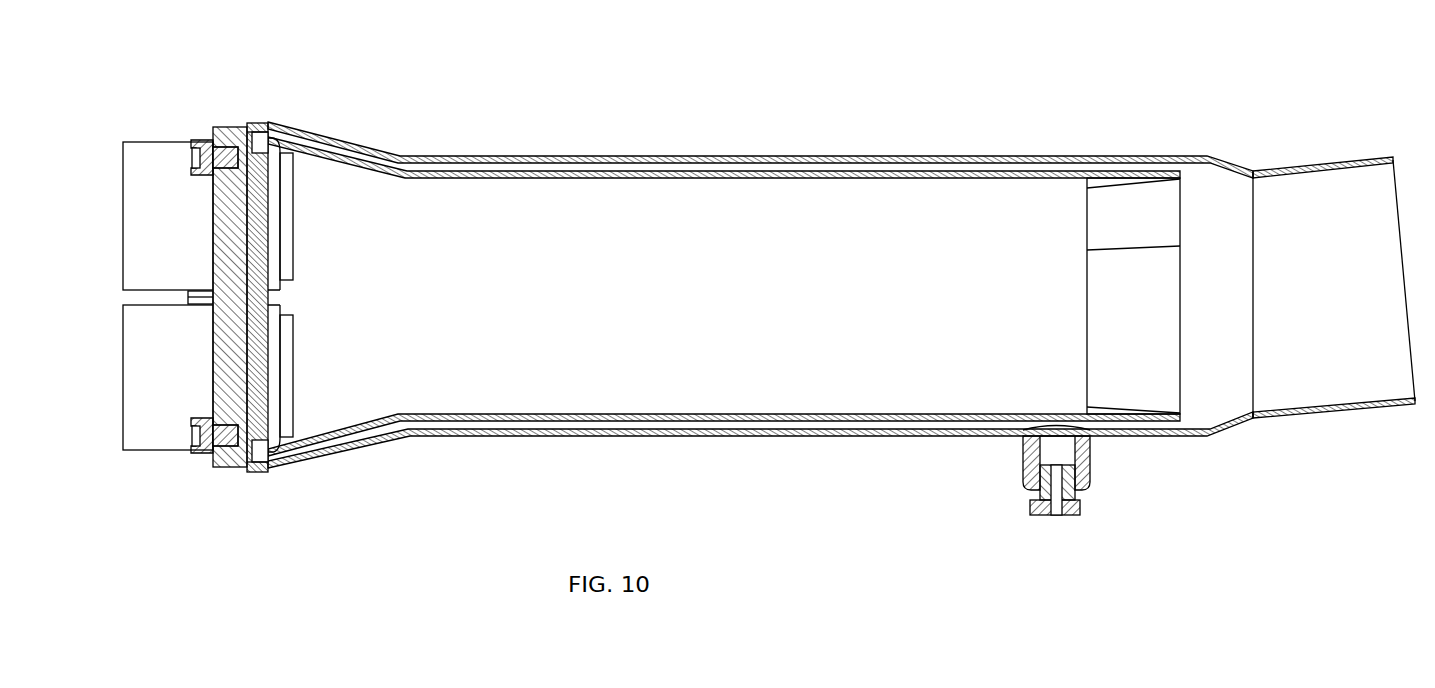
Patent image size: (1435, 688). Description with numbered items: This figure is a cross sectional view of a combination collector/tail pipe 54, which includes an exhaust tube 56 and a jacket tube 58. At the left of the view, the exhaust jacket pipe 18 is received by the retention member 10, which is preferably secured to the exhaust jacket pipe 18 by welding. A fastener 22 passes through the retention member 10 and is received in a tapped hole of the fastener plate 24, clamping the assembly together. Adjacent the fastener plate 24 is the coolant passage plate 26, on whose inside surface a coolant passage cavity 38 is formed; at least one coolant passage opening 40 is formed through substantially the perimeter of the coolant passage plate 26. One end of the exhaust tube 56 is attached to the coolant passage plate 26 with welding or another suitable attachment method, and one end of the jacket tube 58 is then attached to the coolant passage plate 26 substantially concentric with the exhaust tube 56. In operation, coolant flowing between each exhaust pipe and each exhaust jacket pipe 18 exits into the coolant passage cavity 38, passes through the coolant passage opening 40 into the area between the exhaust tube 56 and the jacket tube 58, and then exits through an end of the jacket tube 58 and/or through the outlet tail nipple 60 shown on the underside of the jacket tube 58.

The retention member 10 is at (269, 284).
The exhaust jacket pipe 18 is at (148, 172).
The fastener 22 is at (205, 455).
The fastener plate 24 is at (232, 128).
The coolant passage plate 26 is at (257, 472).
The coolant passage cavity 38 is at (250, 378).
The coolant passage opening 40 is at (268, 140).
The combination collector/tail pipe 54 is at (541, 108).
The exhaust tube 56 is at (670, 415).
The jacket tube 58 is at (733, 157).
The outlet tail nipple 60 is at (1027, 470).